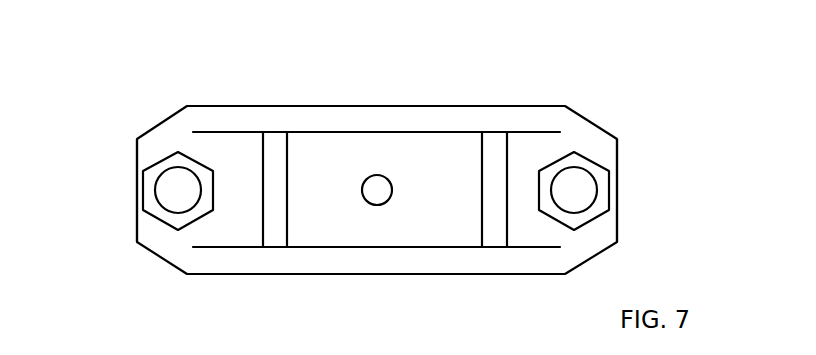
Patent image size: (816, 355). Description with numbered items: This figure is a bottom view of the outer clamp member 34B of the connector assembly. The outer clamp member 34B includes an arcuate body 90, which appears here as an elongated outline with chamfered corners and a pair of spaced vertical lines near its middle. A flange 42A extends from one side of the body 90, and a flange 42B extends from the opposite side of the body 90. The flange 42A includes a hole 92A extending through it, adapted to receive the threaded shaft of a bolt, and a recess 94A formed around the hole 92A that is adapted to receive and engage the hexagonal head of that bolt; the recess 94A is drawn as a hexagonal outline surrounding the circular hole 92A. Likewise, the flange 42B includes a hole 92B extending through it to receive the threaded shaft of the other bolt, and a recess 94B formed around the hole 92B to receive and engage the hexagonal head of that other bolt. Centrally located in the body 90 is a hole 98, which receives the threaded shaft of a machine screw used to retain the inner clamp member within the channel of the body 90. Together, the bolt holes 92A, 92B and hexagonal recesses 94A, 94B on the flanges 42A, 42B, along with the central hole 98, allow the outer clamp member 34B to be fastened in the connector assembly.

The outer clamp member 34B is at (655, 60).
The arcuate body 90 is at (488, 106).
The hole 98 is at (380, 188).
The recess 94A is at (575, 150).
The recess 94B is at (178, 150).
The hole 92A is at (578, 187).
The hole 92B is at (175, 186).
The flange 42A is at (617, 190).
The flange 42B is at (137, 188).